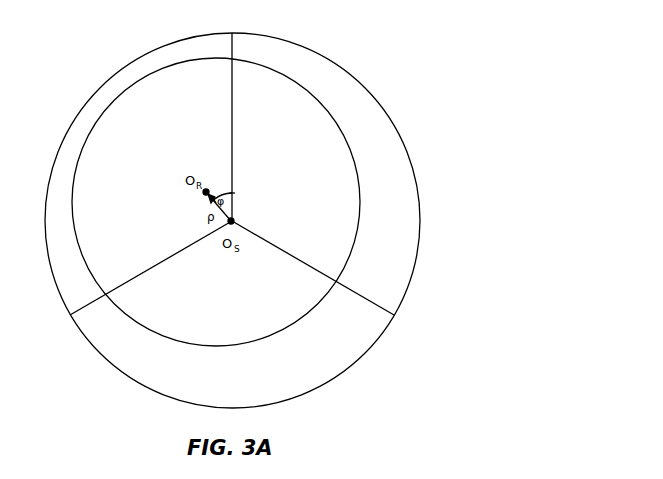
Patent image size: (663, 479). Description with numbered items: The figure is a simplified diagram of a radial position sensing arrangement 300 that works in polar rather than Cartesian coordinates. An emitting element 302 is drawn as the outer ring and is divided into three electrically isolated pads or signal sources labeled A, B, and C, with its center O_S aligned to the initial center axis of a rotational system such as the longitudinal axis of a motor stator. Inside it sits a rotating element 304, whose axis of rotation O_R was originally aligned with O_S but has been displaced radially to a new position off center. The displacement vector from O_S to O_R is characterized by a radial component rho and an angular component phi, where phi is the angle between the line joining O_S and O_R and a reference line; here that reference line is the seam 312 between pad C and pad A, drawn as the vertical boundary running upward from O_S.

The sector arrangement 300 is at (522, 66).
The emitting element 302 is at (320, 54).
The rotating element 304 is at (122, 92).
The seam 312 is at (232, 33).